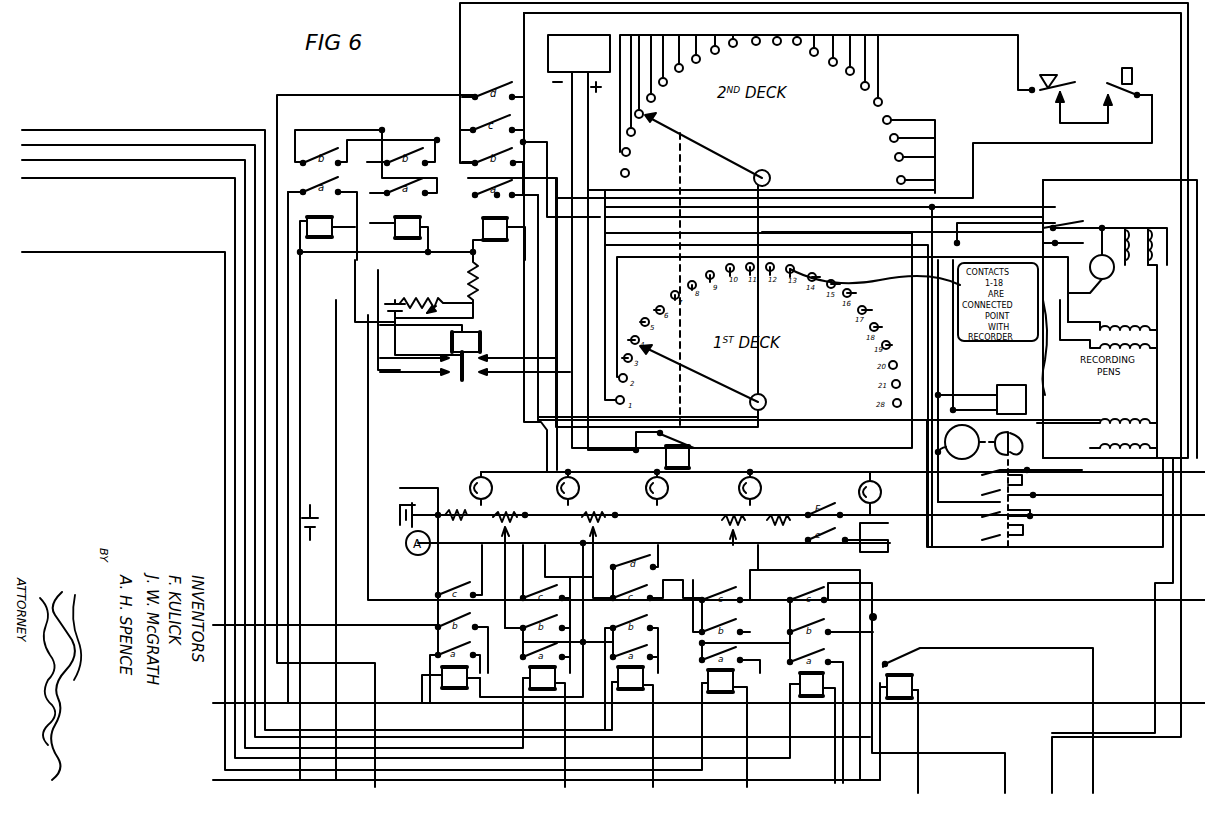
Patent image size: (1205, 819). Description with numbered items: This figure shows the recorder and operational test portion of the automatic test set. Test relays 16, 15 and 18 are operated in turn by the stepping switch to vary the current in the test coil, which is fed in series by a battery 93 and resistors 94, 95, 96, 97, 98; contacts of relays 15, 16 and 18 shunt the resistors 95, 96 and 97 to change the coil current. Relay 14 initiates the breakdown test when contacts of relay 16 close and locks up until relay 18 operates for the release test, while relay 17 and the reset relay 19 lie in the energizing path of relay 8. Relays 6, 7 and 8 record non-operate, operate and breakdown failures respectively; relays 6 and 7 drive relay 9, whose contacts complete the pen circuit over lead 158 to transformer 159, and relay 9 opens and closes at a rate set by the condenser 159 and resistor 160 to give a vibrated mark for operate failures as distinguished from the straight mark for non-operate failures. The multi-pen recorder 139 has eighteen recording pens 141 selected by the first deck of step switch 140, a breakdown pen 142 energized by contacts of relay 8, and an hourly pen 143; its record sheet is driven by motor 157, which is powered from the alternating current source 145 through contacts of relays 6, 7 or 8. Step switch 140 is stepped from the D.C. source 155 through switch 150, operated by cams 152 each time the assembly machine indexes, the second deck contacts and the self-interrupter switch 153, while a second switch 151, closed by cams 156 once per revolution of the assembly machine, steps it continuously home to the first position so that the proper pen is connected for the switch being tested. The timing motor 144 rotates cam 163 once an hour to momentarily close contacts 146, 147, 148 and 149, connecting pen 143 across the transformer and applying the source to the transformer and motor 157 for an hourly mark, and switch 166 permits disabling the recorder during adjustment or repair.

The relay RY6 6 is at (385, 229).
The relay RY7 7 is at (404, 229).
The relay RY8 8 is at (490, 232).
The relay RY9 9 is at (475, 352).
The relay RY14 14 is at (440, 680).
The relay RY15 15 is at (529, 723).
The relay RY16 16 is at (632, 727).
The relay RY17 17 is at (724, 728).
The relay RY18 18 is at (812, 728).
The relay RY19 19 is at (910, 682).
The battery 93 is at (357, 521).
The resistor 94 is at (456, 523).
The resistor 95 is at (512, 488).
The resistor 96 is at (582, 524).
The resistor 97 is at (728, 503).
The resistor 98 is at (780, 492).
The recorder 139 is at (1153, 458).
The step switch 140 is at (689, 459).
The recording pens 141 is at (1118, 325).
The pen 142 is at (1125, 422).
The pen 143 is at (1090, 448).
The recorder timing motor 144 is at (938, 452).
The alternating current source 145 is at (1005, 385).
The contacts 146 is at (982, 475).
The contacts 147 is at (982, 495).
The contacts 148 is at (982, 517).
The contacts 149 is at (982, 540).
The switch 150 is at (1068, 91).
The second switch 151 is at (1160, 80).
The cams 152 is at (1068, 80).
The self-interrupter switch 153 is at (682, 438).
The D.C. source 155 is at (590, 20).
The cams 156 is at (1127, 68).
The recorder motor 157 is at (1112, 356).
The lead 158 is at (1097, 215).
The transformer 159 is at (393, 298).
The resistor 160 is at (436, 285).
The cam 163 is at (1008, 489).
The switch 166 is at (1040, 228).